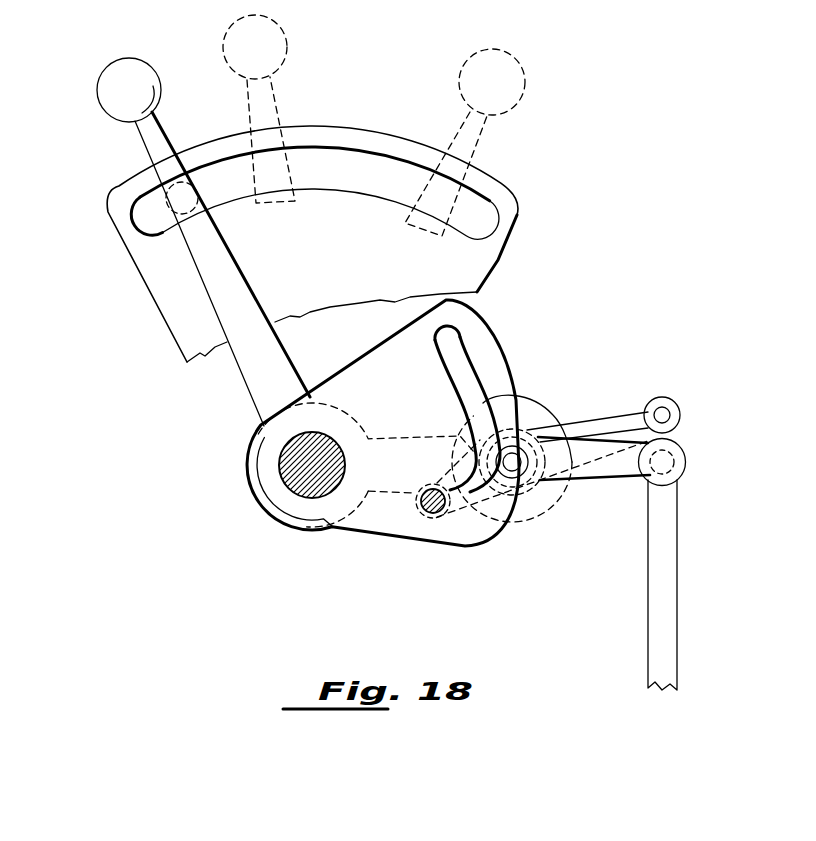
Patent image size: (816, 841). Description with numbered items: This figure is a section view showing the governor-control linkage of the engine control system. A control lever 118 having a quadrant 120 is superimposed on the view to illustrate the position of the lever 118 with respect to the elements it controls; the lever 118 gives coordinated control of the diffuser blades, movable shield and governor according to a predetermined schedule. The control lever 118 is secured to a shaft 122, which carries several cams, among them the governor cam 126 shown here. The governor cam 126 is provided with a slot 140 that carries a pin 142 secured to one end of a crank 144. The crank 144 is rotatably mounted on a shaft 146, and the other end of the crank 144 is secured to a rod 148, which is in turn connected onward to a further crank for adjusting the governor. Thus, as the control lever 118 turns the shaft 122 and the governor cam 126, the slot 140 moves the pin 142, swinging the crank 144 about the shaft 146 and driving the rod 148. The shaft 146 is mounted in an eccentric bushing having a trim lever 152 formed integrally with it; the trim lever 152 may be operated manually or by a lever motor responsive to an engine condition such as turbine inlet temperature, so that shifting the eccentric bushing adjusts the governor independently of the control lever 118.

The control lever 118 is at (105, 92).
The quadrant 120 is at (147, 276).
The shaft 122 is at (297, 445).
The governor cam 126 is at (487, 347).
The slot 140 is at (455, 338).
The pin 142 is at (435, 517).
The crank 144 is at (630, 472).
The shaft 146 is at (535, 522).
The rod 148 is at (664, 530).
The trim lever 152 is at (617, 418).